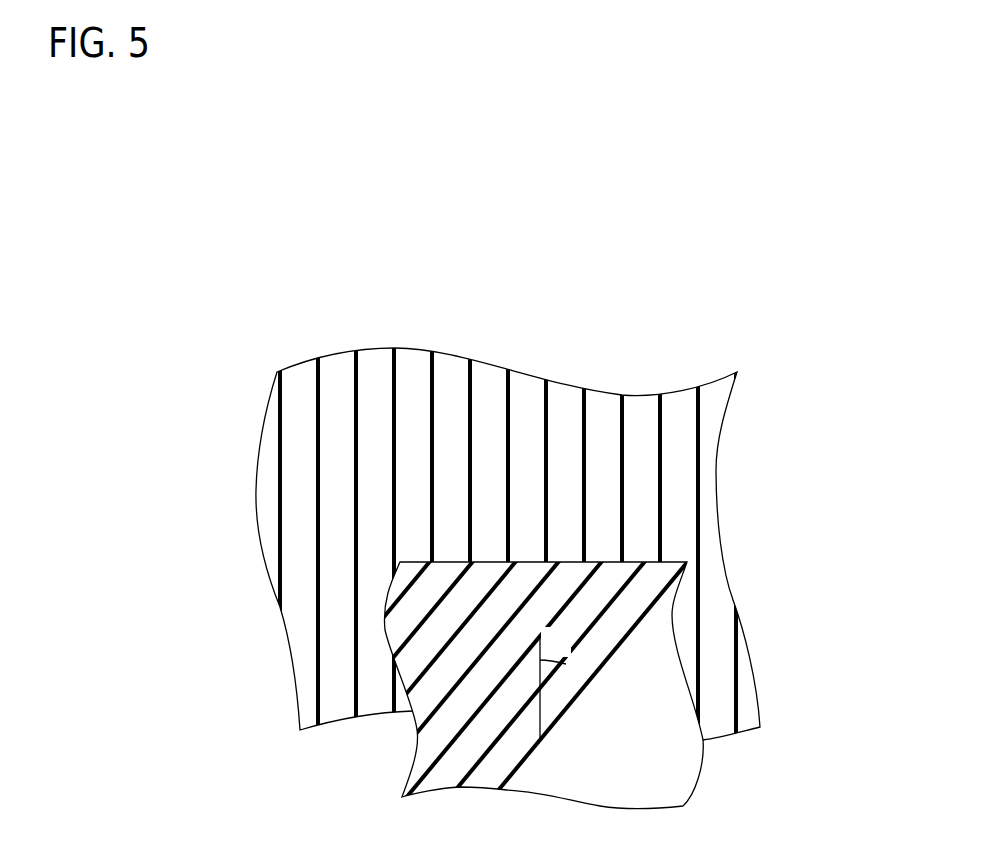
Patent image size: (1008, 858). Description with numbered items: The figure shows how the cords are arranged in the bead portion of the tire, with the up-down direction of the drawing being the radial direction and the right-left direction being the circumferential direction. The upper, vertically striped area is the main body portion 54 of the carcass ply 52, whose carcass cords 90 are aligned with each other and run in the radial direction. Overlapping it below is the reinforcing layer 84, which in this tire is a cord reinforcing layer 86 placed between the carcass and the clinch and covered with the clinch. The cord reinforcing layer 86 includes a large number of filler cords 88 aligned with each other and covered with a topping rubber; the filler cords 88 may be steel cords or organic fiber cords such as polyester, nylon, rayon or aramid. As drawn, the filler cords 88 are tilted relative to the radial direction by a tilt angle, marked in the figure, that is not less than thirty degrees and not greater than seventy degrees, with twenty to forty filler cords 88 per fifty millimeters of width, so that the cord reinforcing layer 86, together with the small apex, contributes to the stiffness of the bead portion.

The carcass ply 52 is at (559, 536).
The main body portion 54 is at (559, 536).
The carcass cords 90 is at (508, 418).
The cord reinforcing layer 86 is at (526, 698).
The reinforcing layer 84 is at (526, 698).
The filler cords 88 is at (482, 768).